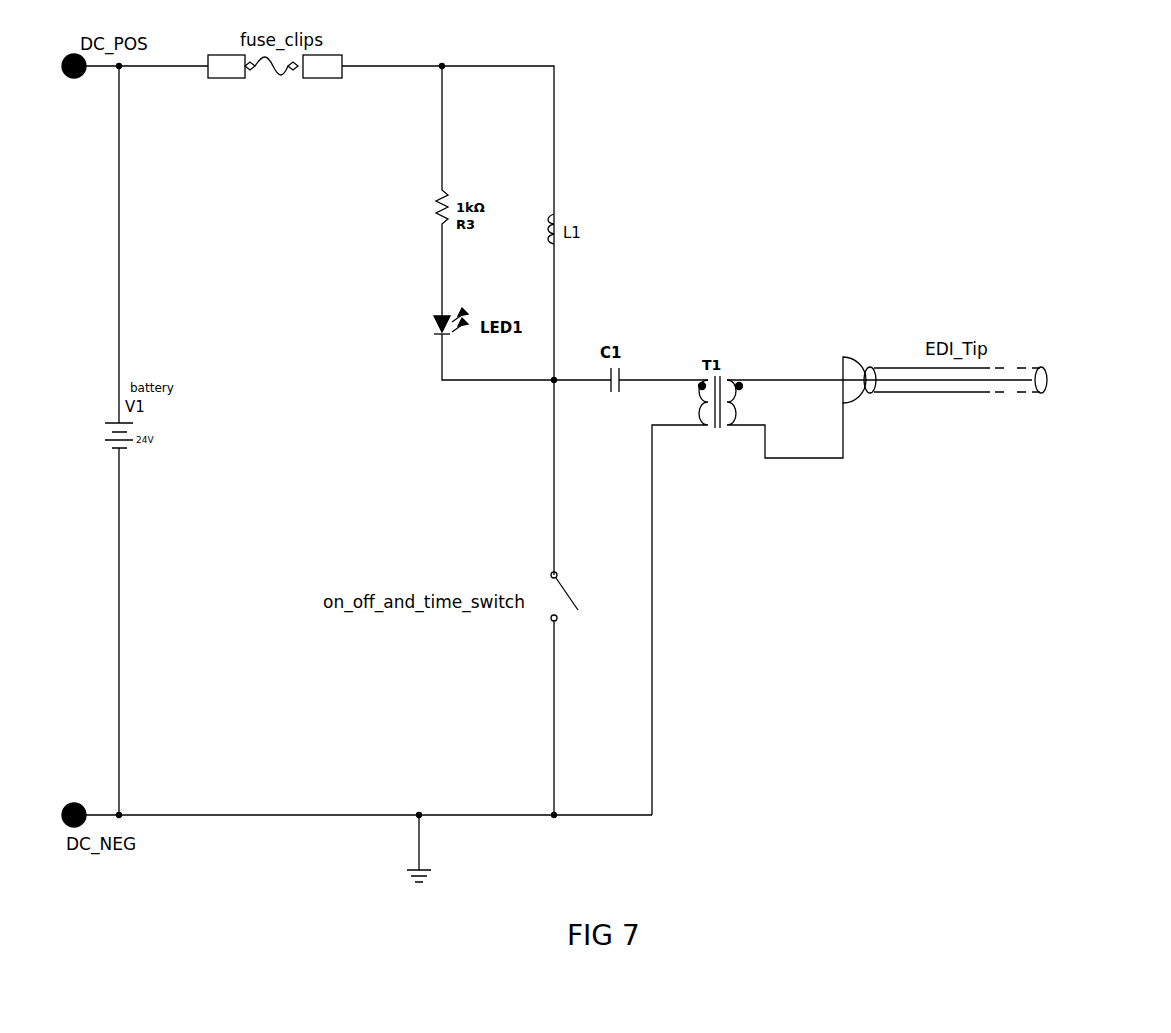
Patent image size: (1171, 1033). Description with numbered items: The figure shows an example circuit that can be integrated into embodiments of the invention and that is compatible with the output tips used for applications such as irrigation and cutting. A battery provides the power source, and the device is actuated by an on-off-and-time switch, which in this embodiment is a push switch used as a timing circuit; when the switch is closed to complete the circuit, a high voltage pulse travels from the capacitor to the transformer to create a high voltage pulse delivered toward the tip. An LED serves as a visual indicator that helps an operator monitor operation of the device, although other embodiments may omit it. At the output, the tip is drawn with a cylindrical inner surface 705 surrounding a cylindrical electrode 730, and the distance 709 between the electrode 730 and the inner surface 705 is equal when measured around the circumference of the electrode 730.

The inner surface 705 is at (1050, 383).
The distance 709 is at (974, 390).
The electrode 730 is at (1013, 374).